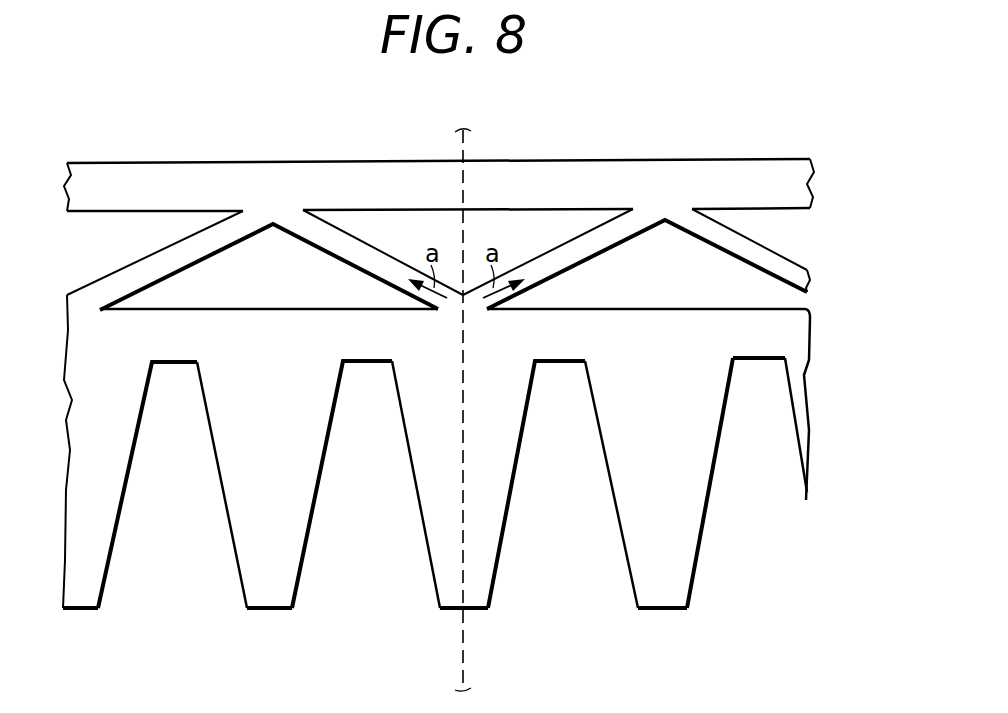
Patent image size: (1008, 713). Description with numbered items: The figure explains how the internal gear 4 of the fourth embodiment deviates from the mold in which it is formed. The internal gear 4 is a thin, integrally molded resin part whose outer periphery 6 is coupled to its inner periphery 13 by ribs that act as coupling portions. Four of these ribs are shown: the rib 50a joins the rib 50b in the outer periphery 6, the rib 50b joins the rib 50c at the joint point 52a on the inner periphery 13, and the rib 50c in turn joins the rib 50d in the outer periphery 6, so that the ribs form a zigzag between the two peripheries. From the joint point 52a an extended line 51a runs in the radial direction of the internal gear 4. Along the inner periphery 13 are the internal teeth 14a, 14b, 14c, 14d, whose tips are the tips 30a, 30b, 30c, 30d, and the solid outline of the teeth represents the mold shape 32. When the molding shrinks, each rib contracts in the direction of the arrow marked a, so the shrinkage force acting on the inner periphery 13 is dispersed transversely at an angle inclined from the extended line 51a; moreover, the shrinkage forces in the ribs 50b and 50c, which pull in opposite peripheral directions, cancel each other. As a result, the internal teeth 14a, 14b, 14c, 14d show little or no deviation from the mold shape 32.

The internal gear 4 is at (665, 177).
The outer periphery 6 is at (439, 161).
The inner periphery 13 is at (469, 485).
The internal tooth 14a is at (97, 545).
The internal tooth 14b is at (292, 548).
The internal tooth 14c is at (485, 538).
The internal tooth 14d is at (743, 504).
The tip of internal tooth 30a is at (74, 612).
The tip of internal tooth 30b is at (265, 612).
The tip of internal tooth 30c is at (481, 612).
The tip of internal tooth 30d is at (655, 612).
The mold shape 32 is at (715, 478).
The rib 50a is at (130, 277).
The rib 50b is at (338, 247).
The rib 50c is at (613, 234).
The rib 50d is at (765, 252).
The extended line 51a is at (478, 138).
The joint point 52a is at (462, 308).